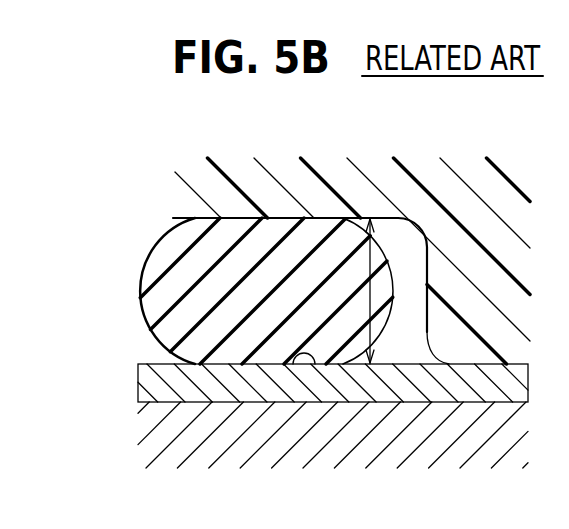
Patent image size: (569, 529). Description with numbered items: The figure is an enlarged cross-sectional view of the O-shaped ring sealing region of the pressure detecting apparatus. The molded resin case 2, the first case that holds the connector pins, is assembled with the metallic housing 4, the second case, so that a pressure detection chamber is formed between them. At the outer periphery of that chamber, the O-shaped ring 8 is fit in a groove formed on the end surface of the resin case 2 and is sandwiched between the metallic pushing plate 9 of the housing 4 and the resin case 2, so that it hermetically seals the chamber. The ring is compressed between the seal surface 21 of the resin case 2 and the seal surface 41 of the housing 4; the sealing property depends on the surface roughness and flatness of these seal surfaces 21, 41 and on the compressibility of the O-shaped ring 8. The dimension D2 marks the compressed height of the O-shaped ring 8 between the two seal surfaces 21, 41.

The molded resin case 2 is at (483, 225).
The seal surface of the resin case 21 is at (273, 218).
The O-shaped ring 8 is at (158, 286).
The metallic pushing plate 9 is at (152, 385).
The metallic housing 4 is at (219, 452).
The seal surface of the housing 41 is at (293, 364).
The solder height dimension D2 is at (354, 291).